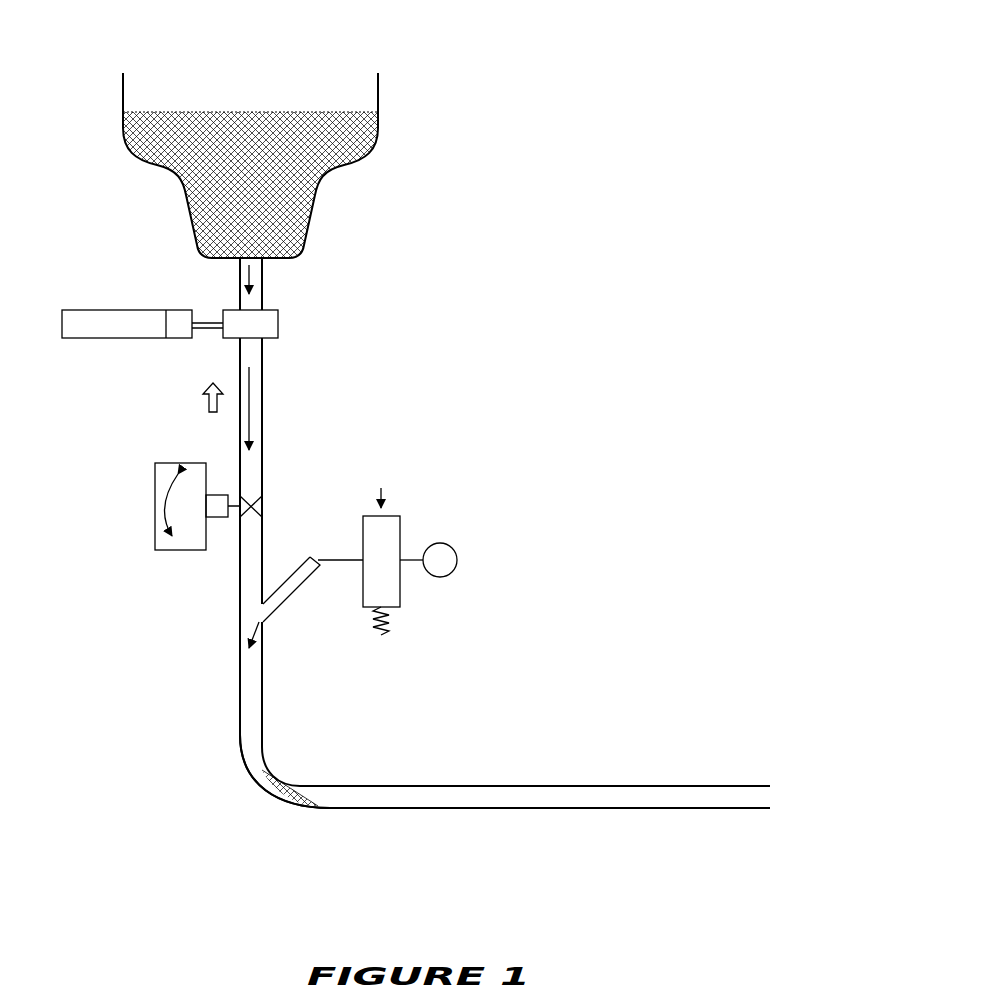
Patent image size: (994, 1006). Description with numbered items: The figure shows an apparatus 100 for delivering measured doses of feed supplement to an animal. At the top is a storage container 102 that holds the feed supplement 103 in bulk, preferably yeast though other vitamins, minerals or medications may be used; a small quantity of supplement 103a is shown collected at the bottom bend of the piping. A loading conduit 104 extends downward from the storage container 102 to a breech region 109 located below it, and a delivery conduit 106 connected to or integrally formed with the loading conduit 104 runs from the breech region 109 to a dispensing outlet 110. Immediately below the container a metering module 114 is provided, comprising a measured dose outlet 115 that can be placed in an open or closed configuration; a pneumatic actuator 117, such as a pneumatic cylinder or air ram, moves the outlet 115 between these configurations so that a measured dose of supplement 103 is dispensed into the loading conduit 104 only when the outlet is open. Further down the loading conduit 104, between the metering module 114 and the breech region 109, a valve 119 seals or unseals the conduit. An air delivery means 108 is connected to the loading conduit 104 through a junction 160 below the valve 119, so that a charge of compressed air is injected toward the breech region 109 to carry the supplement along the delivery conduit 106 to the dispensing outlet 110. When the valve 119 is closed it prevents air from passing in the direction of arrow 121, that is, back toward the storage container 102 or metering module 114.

The apparatus 100 is at (556, 119).
The storage container 102 is at (317, 210).
The feed supplement 103 is at (163, 118).
The accumulated powder 103a is at (290, 782).
The loading conduit 104 is at (262, 388).
The delivery conduit 106 is at (608, 785).
The air delivery means 108 is at (400, 520).
The breech region 109 is at (260, 788).
The dispensing outlet 110 is at (775, 800).
The metering module 114 is at (176, 296).
The measured dose outlet 115 is at (278, 327).
The pneumatic actuator 117 is at (98, 339).
The valve 119 is at (259, 500).
The arrow 121 is at (203, 400).
The junction 160 is at (292, 598).